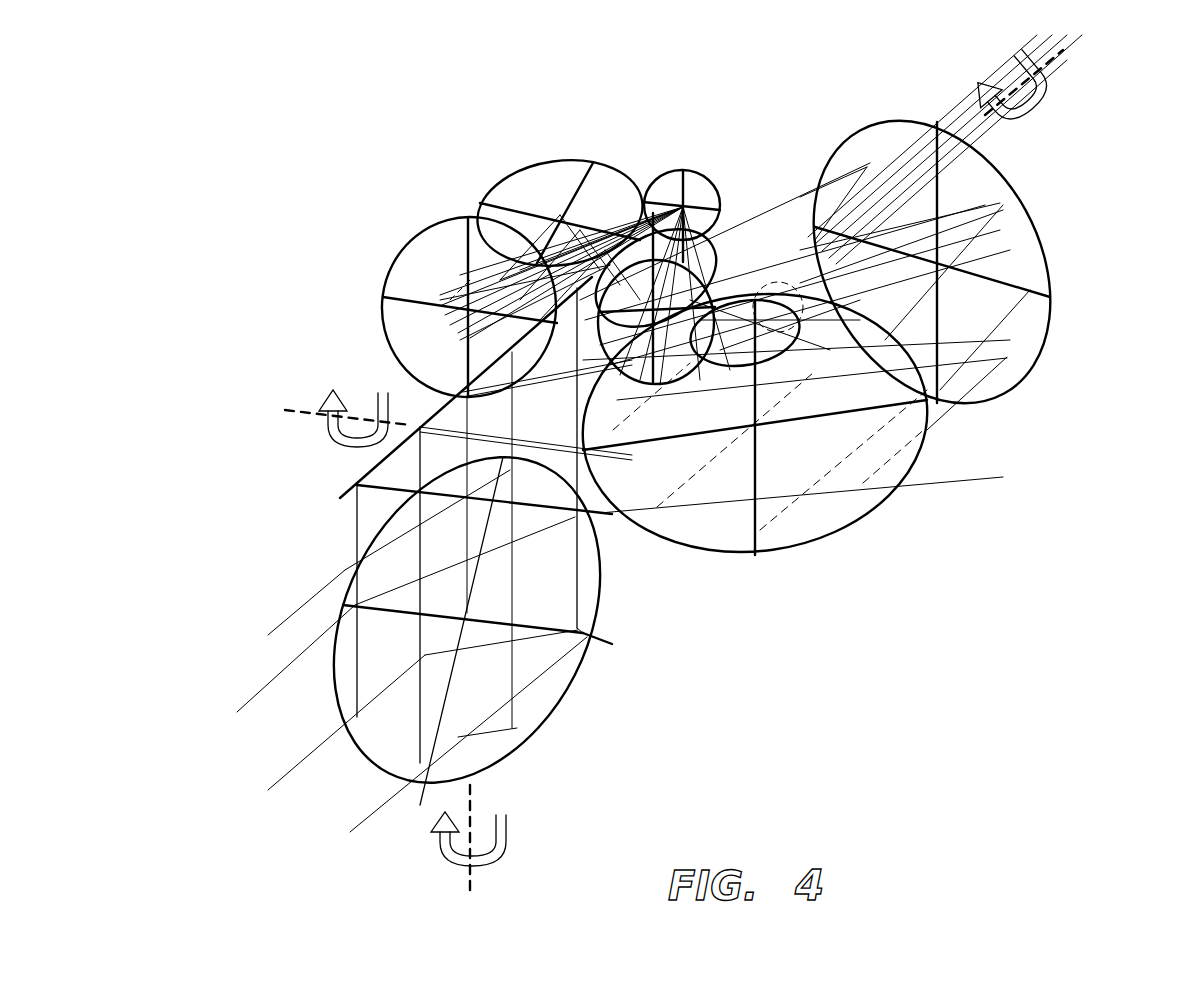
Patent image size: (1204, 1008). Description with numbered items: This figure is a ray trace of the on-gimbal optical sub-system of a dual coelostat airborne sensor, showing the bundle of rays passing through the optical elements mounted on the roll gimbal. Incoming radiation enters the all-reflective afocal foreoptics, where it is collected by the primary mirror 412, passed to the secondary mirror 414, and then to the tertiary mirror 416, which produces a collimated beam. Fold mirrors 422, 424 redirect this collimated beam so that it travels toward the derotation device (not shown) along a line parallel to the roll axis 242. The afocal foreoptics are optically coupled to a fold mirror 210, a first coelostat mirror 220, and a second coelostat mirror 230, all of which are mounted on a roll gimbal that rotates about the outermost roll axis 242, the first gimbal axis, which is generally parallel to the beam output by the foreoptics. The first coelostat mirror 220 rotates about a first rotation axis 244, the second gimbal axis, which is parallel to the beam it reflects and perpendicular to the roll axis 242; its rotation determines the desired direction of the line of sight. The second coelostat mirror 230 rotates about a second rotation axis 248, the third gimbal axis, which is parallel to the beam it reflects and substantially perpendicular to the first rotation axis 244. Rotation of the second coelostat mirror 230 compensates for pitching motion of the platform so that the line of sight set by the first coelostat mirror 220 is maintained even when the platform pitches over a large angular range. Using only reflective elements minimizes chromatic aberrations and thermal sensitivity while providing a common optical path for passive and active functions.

The fold mirror 210 is at (878, 502).
The first coelostat mirror 220 is at (595, 643).
The second coelostat mirror 230 is at (430, 415).
The roll axis 242 is at (1060, 62).
The first rotation axis 244 is at (473, 793).
The second rotation axis 248 is at (286, 410).
The primary mirror 412 is at (1043, 218).
The secondary mirror 414 is at (699, 408).
The tertiary mirror 416 is at (417, 230).
The fold mirror 422 is at (560, 162).
The fold mirror 424 is at (690, 175).